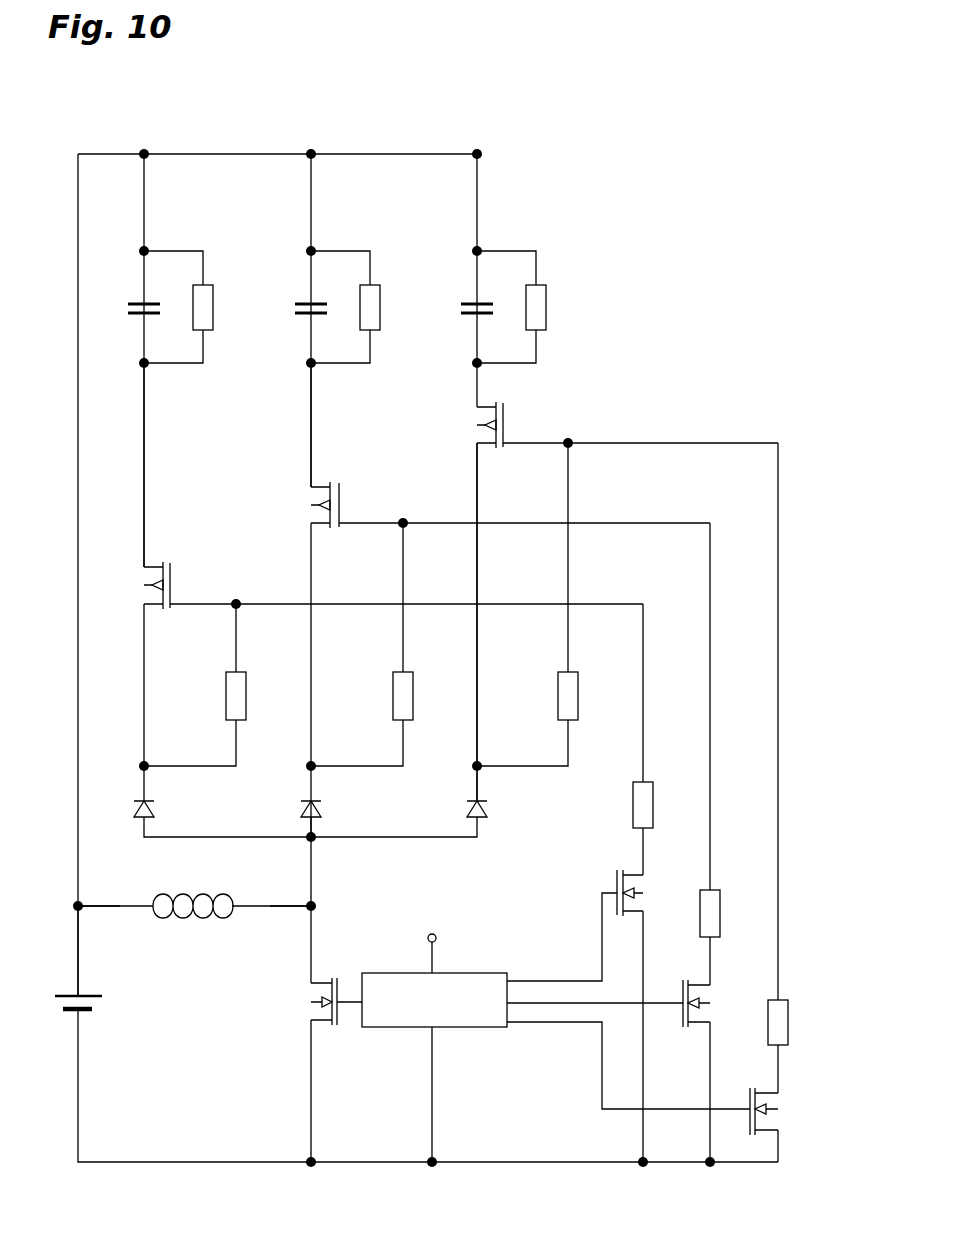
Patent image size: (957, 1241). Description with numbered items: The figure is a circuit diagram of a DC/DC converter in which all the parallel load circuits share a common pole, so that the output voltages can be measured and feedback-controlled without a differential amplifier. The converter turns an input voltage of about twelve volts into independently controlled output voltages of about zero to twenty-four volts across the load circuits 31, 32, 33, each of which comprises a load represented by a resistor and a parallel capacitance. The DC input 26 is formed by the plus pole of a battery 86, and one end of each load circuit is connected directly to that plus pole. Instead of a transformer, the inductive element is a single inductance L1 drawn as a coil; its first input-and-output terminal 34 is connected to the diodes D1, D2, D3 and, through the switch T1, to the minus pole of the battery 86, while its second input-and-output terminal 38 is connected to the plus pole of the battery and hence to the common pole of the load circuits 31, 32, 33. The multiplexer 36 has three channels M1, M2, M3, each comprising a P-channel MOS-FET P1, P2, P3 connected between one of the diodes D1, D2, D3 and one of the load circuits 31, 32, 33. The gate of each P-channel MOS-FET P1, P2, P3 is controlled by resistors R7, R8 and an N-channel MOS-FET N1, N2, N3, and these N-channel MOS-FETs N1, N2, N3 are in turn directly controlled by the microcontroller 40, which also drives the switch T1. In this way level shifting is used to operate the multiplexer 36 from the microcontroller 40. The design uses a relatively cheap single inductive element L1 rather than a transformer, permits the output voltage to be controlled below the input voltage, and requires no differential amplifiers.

The load circuit 31 is at (183, 247).
The load circuit 32 is at (338, 247).
The load circuit 33 is at (508, 248).
The multiplexer 36 is at (702, 388).
The second terminal of inductance 38 is at (113, 904).
The first terminal of inductance 34 is at (258, 904).
The DC input 26 is at (78, 948).
The battery 86 is at (73, 1013).
The microcontroller 40 is at (408, 1028).
The first channel M1 is at (144, 453).
The second channel M2 is at (311, 430).
The third channel M3 is at (477, 497).
The P-channel MOS-FET P1 is at (393, 581).
The P-channel MOS-FET P2 is at (510, 504).
The P-channel MOS-FET P3 is at (627, 419).
The resistor R7 is at (216, 685).
The resistor R8 is at (664, 739).
The diode D1 is at (222, 814).
The diode D2 is at (333, 814).
The diode D3 is at (423, 814).
The inductance L1 is at (194, 926).
The switch T1 is at (309, 1001).
The N-channel MOS-FET N1 is at (599, 1010).
The N-channel MOS-FET N2 is at (683, 1051).
The N-channel MOS-FET N3 is at (753, 1107).